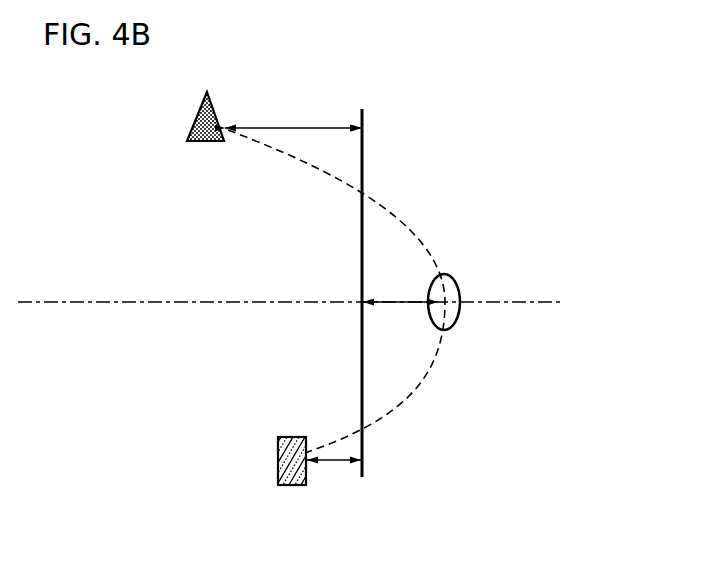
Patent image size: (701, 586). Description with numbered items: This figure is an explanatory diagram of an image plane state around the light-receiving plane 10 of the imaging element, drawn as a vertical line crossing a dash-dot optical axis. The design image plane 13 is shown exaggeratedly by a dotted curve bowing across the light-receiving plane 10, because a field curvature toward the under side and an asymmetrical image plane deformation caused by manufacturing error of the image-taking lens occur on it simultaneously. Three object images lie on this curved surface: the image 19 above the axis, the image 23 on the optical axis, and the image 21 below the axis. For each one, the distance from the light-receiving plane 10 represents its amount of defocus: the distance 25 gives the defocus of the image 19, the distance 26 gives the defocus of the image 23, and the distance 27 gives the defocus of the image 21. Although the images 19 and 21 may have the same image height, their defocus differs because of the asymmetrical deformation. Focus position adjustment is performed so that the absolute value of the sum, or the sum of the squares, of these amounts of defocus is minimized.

The light-receiving plane 10 is at (362, 118).
The design image plane 13 is at (405, 223).
The image 19 is at (197, 121).
The image 21 is at (288, 486).
The image 23 is at (460, 285).
The distance 25 is at (285, 128).
The distance 26 is at (387, 298).
The distance 27 is at (330, 463).